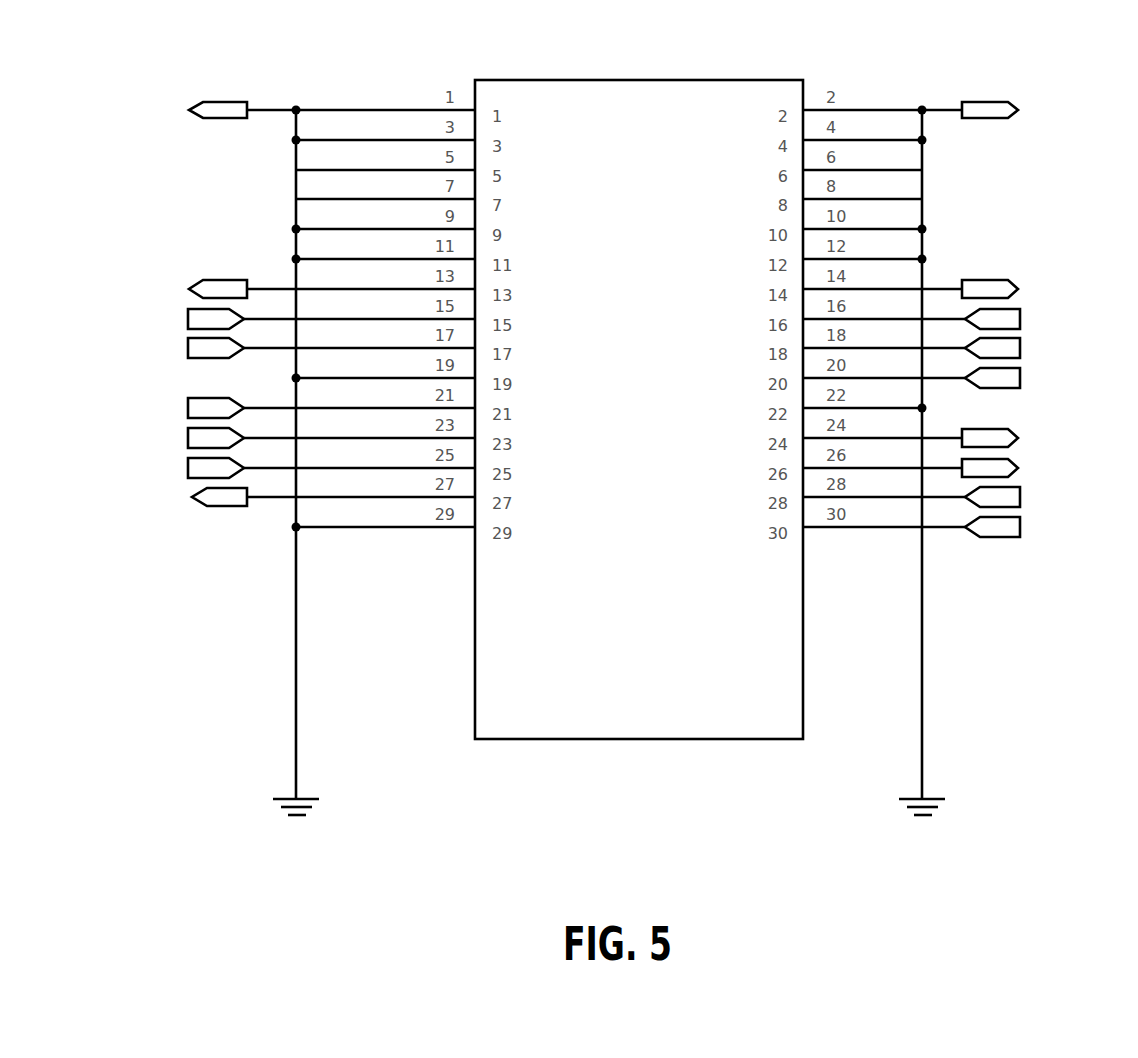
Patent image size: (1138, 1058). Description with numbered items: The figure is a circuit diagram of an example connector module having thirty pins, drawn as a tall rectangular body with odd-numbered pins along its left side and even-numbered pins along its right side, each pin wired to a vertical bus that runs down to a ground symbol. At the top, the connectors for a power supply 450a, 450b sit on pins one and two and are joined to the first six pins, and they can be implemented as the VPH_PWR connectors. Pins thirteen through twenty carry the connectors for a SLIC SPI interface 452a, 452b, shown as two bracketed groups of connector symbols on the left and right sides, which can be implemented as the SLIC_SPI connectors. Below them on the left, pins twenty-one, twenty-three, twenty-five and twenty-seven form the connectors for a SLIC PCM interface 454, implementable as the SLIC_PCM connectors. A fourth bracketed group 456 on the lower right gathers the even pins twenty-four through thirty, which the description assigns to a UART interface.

The power supply connector 450a is at (226, 99).
The power supply connector 450b is at (991, 99).
The SLIC SPI interface connector 452a is at (168, 279).
The SLIC SPI interface connector 452b is at (1042, 273).
The SLIC PCM interface connector 454 is at (178, 395).
The fourth group of input/output connectors 456 is at (1036, 428).